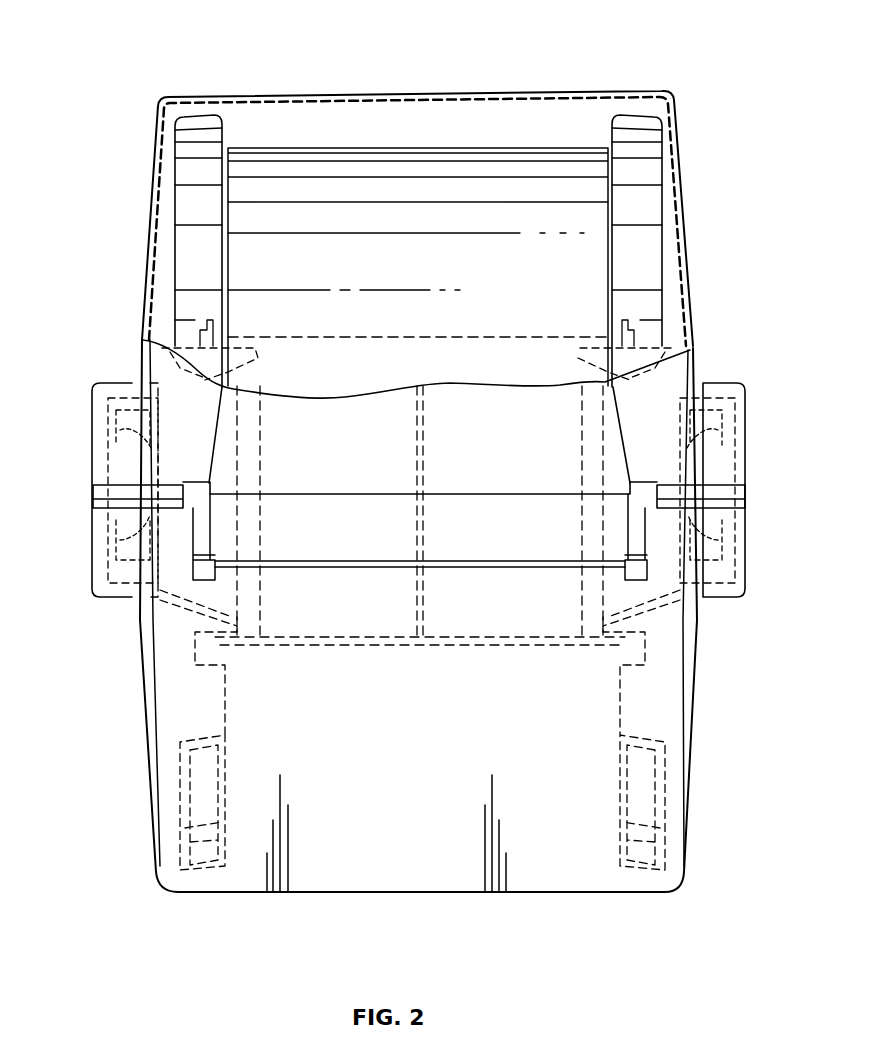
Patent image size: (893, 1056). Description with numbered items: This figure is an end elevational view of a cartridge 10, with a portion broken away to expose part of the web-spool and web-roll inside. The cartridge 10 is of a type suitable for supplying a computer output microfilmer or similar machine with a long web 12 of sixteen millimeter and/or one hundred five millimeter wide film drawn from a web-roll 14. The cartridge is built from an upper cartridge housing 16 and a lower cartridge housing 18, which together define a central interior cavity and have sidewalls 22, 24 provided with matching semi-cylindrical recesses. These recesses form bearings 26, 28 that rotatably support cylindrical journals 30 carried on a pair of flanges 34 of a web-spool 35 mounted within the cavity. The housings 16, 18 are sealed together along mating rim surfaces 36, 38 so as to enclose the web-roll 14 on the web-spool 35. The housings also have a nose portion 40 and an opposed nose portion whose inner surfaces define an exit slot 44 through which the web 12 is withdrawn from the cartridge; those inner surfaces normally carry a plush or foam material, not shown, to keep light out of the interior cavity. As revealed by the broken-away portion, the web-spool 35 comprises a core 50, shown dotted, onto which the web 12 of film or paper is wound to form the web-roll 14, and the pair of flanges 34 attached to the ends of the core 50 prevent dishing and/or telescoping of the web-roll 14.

The cartridge 10 is at (470, 78).
The web 12 is at (433, 149).
The web-roll 14 is at (430, 281).
The upper cartridge housing 16 is at (153, 222).
The lower cartridge housing 18 is at (148, 718).
The sidewall 22 is at (150, 270).
The sidewall 24 is at (156, 814).
The bearing 26 is at (130, 382).
The bearing 28 is at (125, 600).
The cylindrical journal 30 is at (108, 426).
The flange 34 is at (205, 270).
The web-spool 35 is at (443, 337).
The mating rim surface 36 is at (93, 497).
The mating rim surface 38 is at (93, 508).
The nose portion 40 is at (514, 540).
The exit slot 44 is at (356, 570).
The core 50 is at (312, 336).